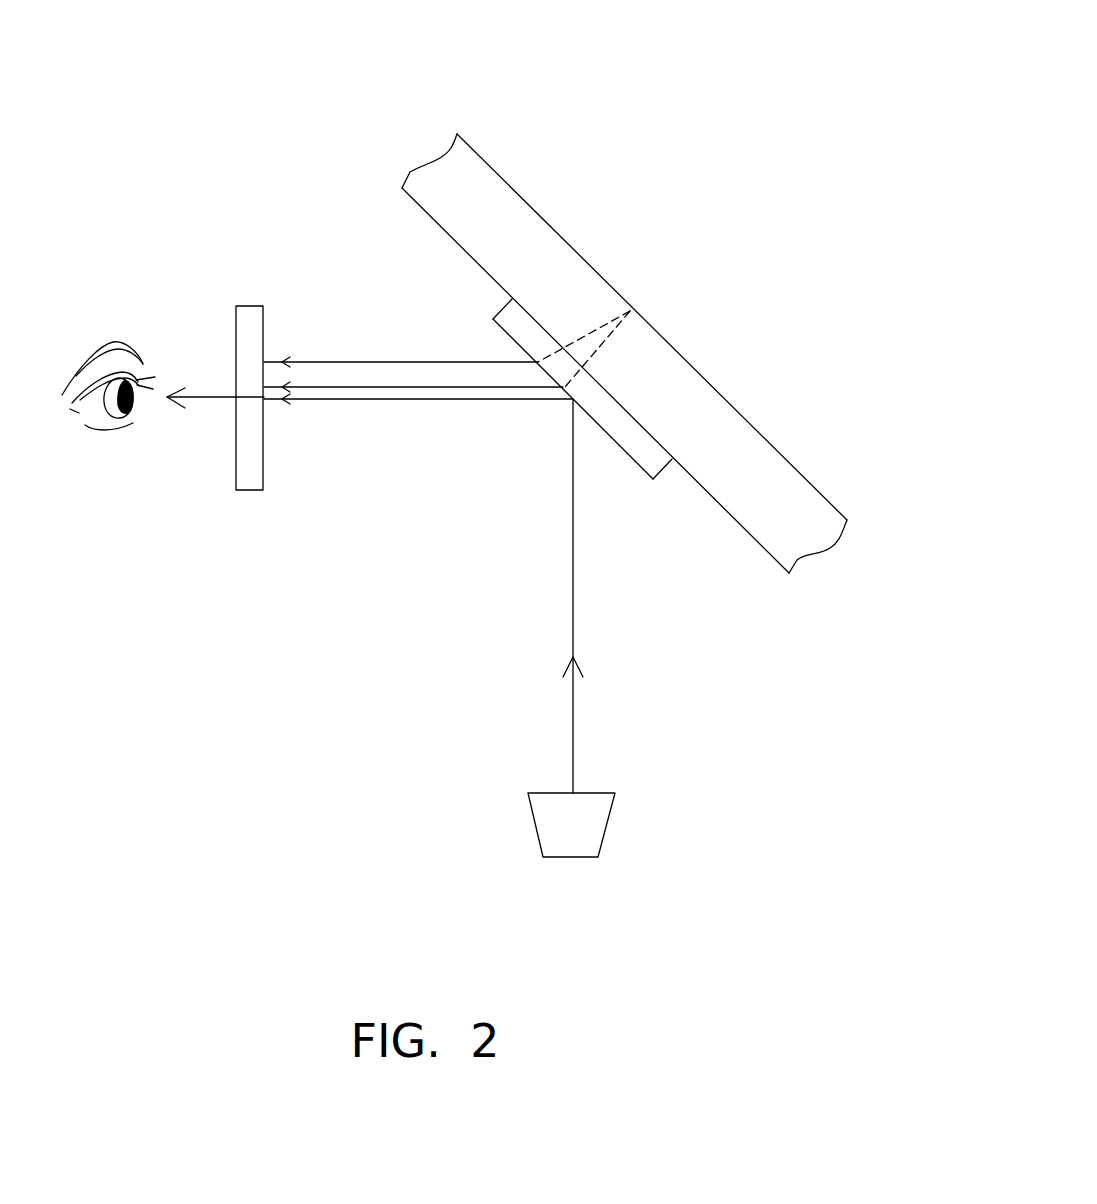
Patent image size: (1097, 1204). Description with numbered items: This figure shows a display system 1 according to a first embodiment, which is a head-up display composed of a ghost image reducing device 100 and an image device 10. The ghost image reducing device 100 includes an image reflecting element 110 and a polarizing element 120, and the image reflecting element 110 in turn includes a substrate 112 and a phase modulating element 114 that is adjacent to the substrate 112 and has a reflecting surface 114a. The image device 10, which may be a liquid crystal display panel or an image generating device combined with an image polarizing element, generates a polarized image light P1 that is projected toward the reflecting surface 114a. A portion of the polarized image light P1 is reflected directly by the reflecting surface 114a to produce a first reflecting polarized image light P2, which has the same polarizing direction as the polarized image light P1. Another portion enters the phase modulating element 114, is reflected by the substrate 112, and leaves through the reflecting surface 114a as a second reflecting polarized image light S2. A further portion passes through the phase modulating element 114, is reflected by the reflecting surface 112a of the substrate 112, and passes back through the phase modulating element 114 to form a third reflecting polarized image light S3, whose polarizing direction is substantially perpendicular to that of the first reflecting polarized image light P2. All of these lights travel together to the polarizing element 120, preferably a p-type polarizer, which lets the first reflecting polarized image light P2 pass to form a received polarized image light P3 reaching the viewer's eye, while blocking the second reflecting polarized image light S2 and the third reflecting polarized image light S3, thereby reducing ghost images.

The display system 1 is at (66, 42).
The image device 10 is at (608, 822).
The ghost image reducing device 100 is at (237, 90).
The image reflecting element 110 is at (417, 182).
The substrate 112 is at (579, 273).
The reflecting surface of substrate 112a is at (707, 385).
The phase modulating element 114 is at (666, 463).
The reflecting surface 114a is at (622, 447).
The polarizing element 120 is at (253, 315).
The polarized image light P1 is at (590, 596).
The first reflecting polarized image light P2 is at (418, 411).
The received polarized image light P3 is at (215, 409).
The second reflecting polarized image light S2 is at (413, 376).
The third reflecting polarized image light S3 is at (401, 351).